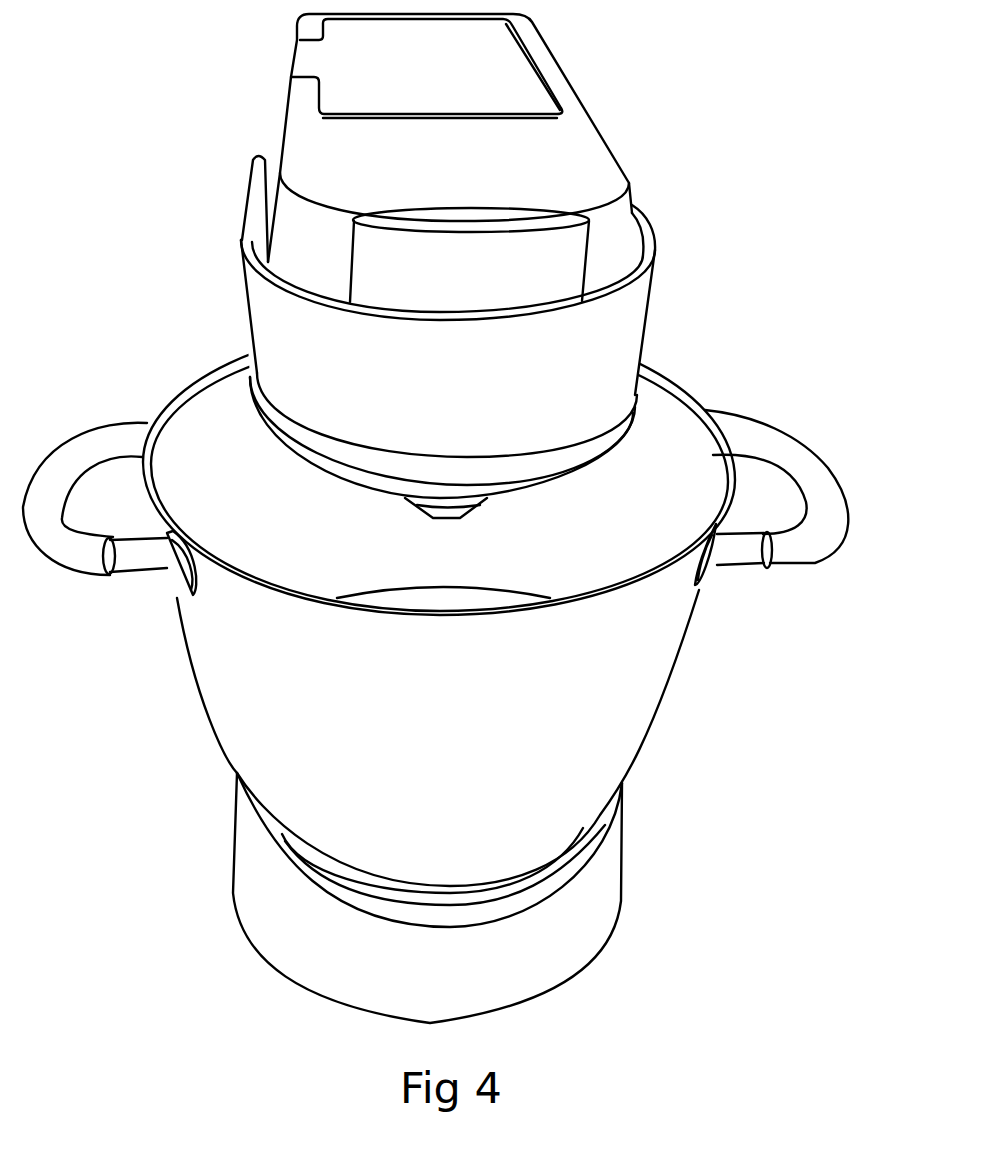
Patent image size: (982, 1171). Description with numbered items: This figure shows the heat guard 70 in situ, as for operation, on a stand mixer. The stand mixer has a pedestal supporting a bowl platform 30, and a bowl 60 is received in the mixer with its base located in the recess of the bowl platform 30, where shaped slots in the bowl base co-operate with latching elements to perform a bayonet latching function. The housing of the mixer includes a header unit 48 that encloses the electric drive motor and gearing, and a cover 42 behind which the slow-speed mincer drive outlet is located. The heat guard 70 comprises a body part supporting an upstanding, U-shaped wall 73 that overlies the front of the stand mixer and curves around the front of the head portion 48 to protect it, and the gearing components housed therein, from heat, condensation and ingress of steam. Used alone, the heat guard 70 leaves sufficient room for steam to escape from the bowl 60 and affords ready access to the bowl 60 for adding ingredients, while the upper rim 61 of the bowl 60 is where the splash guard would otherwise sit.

The bowl platform 30 is at (623, 850).
The cover 42 is at (417, 260).
The header unit 48 is at (583, 168).
The bowl 60 is at (637, 676).
The upper rim 61 is at (706, 410).
The heat guard 70 is at (505, 266).
The U-shaped wall 73 is at (583, 358).